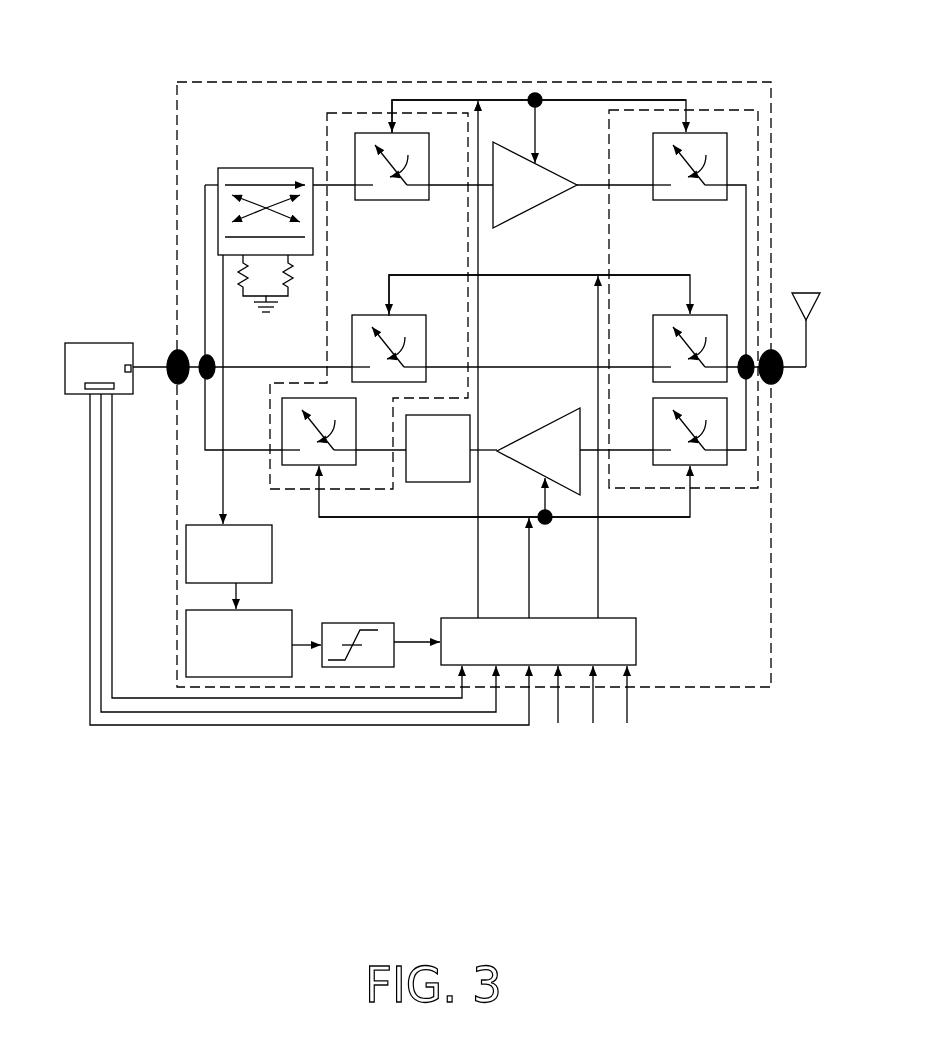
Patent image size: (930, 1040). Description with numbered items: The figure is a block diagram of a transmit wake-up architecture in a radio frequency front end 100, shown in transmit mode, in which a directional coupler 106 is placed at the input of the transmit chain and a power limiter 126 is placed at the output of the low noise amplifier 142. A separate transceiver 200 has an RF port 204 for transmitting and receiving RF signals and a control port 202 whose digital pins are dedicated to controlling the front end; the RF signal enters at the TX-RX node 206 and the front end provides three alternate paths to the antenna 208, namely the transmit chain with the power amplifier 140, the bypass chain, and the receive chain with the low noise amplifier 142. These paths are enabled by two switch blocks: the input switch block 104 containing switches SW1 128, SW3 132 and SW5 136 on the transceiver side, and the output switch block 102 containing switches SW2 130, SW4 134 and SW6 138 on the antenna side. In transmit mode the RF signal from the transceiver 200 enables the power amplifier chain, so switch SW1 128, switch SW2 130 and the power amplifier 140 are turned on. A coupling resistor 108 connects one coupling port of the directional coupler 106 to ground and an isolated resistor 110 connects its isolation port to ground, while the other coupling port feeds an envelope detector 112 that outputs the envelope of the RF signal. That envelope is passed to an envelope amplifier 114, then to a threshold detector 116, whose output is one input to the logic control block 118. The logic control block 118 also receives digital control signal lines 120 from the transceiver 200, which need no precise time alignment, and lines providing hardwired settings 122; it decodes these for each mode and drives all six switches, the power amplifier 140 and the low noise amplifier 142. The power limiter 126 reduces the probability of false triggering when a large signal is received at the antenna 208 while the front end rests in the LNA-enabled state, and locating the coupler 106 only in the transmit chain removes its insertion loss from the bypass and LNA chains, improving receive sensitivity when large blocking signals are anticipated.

The radio frequency front end 100 is at (245, 82).
The output switch block 102 is at (625, 110).
The input switch block 104 is at (347, 113).
The directional coupler 106 is at (253, 168).
The coupling resistor 108 is at (243, 265).
The isolated resistor 110 is at (290, 278).
The envelope detector 112 is at (272, 550).
The envelope amplifier 114 is at (292, 612).
The threshold detector 116 is at (380, 667).
The logic control block 118 is at (636, 640).
The digital control signal lines 120 is at (85, 702).
The hardwired settings lines 122 is at (558, 726).
The power limiter 126 is at (420, 482).
The switch SW1 128 is at (392, 201).
The switch SW2 130 is at (690, 200).
The switch SW3 132 is at (426, 317).
The switch SW4 134 is at (708, 315).
The switch SW5 136 is at (282, 462).
The switch SW6 138 is at (653, 407).
The power amplifier 140 is at (541, 196).
The low noise amplifier 142 is at (568, 462).
The transceiver 200 is at (132, 343).
The control port 202 is at (113, 394).
The RF port 204 is at (125, 365).
The TX-RX 206 is at (176, 355).
The antenna 208 is at (806, 367).